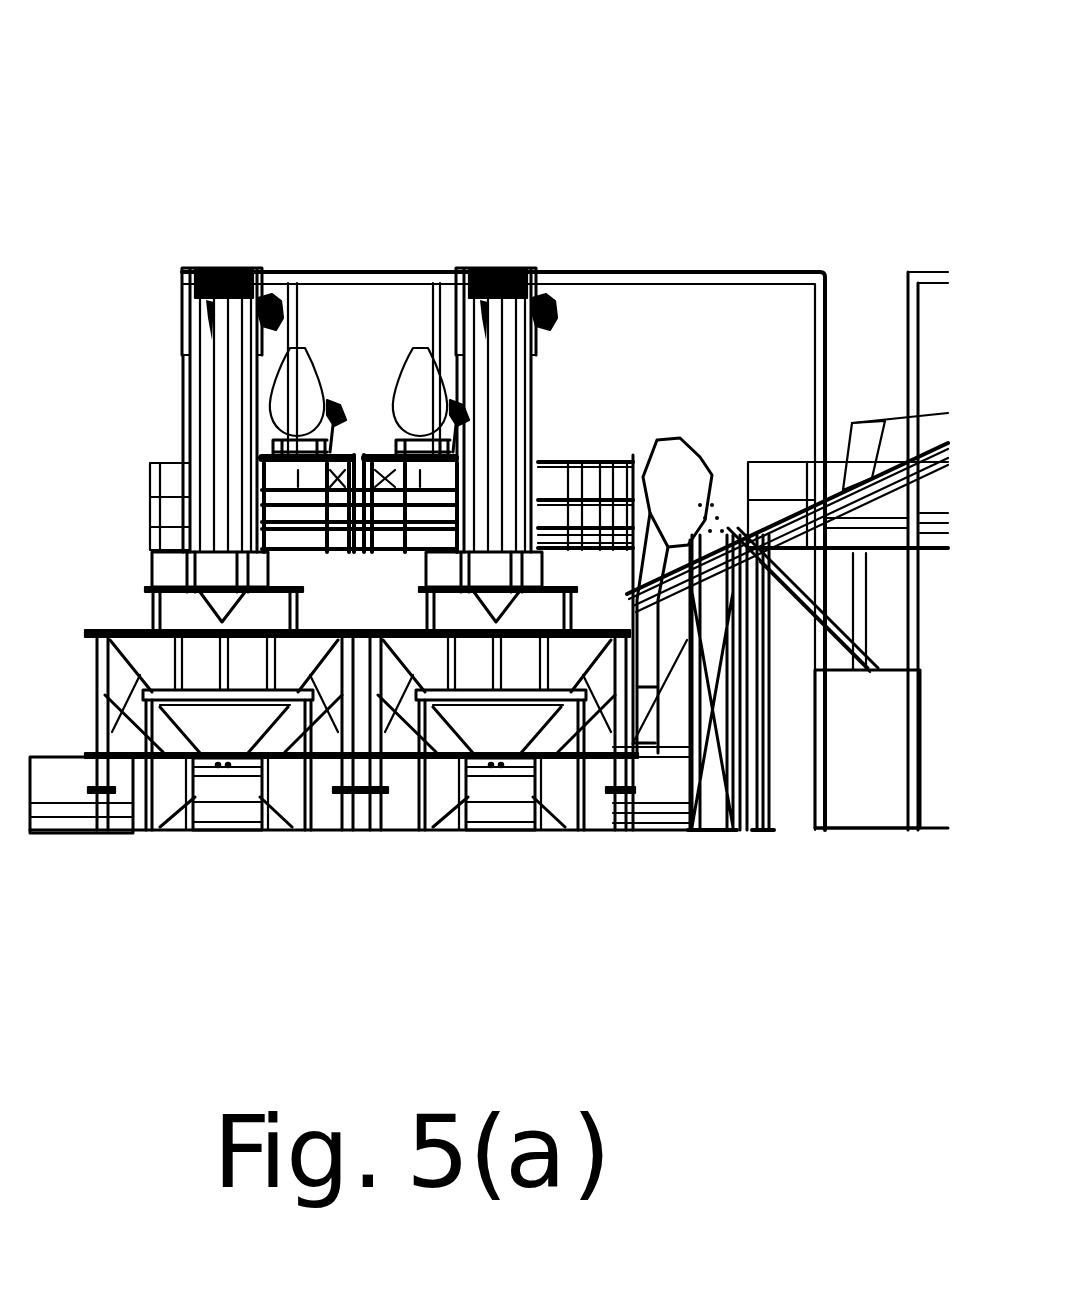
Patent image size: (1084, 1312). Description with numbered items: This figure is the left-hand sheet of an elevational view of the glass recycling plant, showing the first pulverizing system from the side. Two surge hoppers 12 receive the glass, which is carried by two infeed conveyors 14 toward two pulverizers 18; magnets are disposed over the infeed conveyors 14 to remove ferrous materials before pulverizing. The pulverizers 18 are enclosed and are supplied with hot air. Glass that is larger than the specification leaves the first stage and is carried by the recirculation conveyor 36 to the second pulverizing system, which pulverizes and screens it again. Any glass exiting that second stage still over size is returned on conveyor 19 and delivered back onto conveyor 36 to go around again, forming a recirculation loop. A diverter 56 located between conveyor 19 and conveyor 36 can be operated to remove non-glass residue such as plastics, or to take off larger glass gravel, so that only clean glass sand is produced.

The surge hopper 12 is at (508, 715).
The infeed conveyor 14 is at (216, 321).
The pulverizer 18 is at (426, 351).
The recirculation conveyor 19 is at (732, 454).
The recirculation conveyor 36 is at (725, 576).
The diverter 56 is at (653, 427).